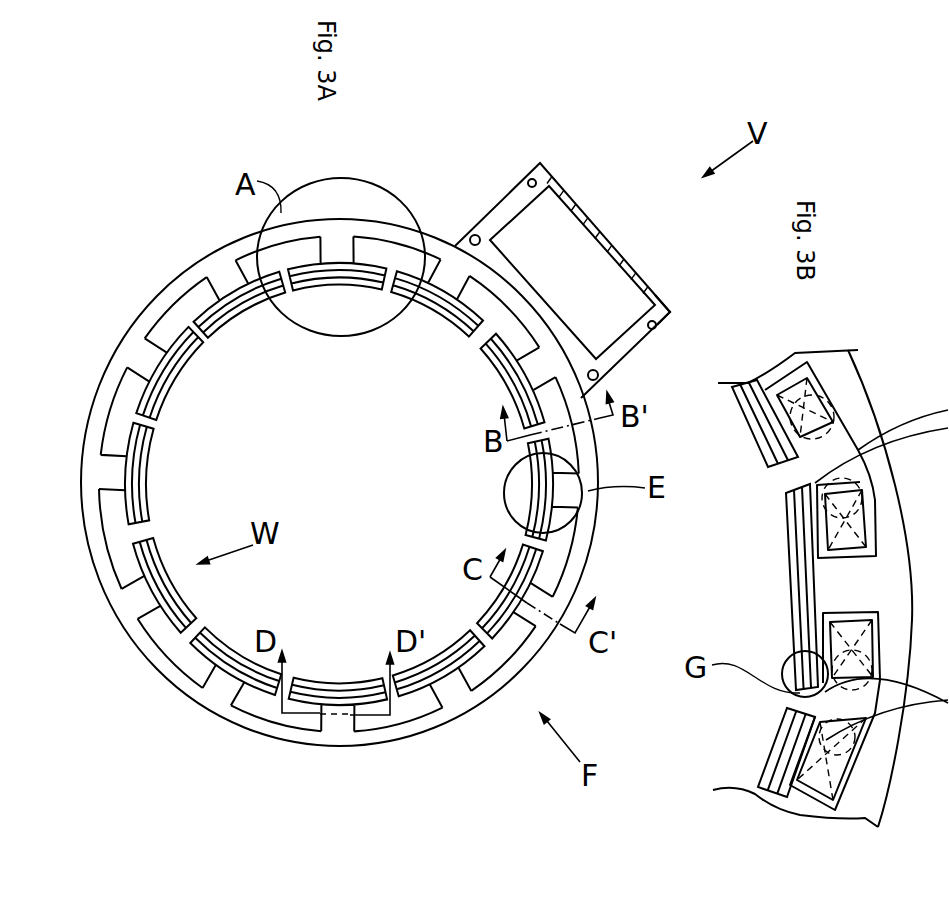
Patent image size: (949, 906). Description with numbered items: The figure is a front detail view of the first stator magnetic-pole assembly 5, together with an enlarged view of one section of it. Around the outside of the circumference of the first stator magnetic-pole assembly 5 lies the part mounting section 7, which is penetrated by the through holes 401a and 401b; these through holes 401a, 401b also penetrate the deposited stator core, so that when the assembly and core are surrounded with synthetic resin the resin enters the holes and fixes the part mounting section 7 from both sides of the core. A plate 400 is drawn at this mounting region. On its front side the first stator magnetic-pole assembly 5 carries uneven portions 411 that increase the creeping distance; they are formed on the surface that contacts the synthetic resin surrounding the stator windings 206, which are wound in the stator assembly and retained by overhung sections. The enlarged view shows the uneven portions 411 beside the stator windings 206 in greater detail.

In FIG. 3A, the first stator magnetic-pole assembly 5 is at (392, 192).
In FIG. 3A, the part mounting section 7 is at (661, 314).
In FIG. 3B, the part mounting section 7 is at (898, 535).
In FIG. 3A, the terminal plate 400 is at (553, 235).
In FIG. 3A, the through hole 401a is at (476, 233).
In FIG. 3A, the through hole 401b is at (600, 376).
In FIG. 3A, the uneven portions 411 is at (147, 450).
In FIG. 3B, the uneven portions 411 is at (752, 406).
In FIG. 3B, the stator windings 206 is at (792, 392).